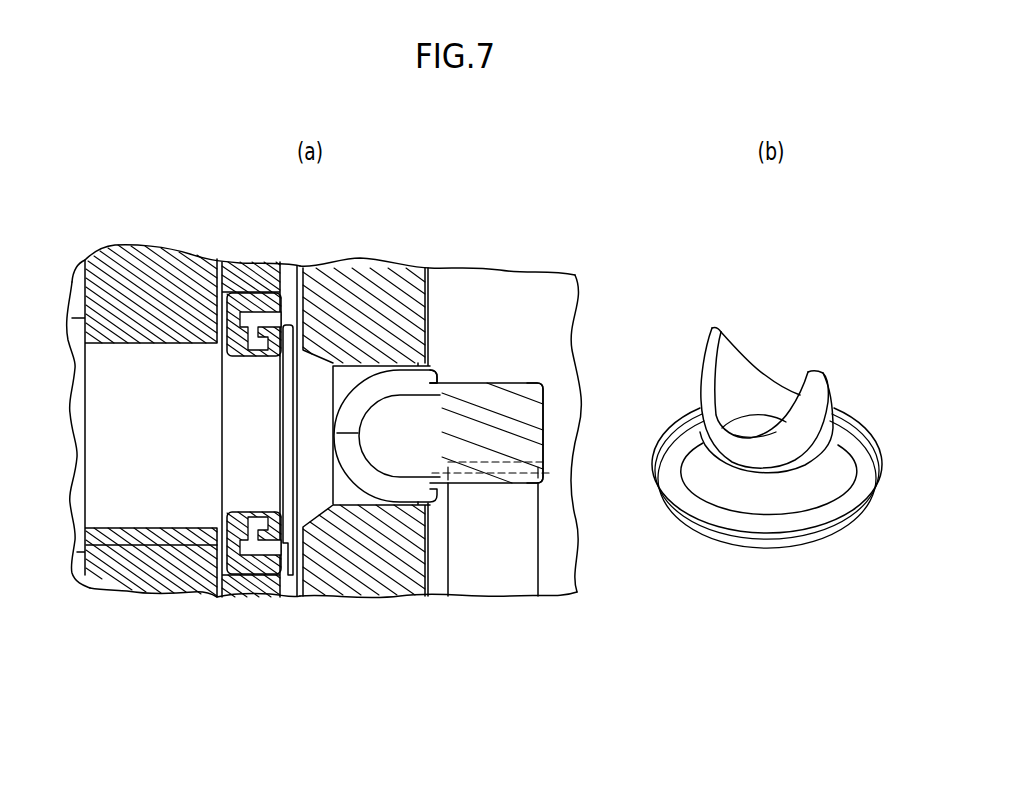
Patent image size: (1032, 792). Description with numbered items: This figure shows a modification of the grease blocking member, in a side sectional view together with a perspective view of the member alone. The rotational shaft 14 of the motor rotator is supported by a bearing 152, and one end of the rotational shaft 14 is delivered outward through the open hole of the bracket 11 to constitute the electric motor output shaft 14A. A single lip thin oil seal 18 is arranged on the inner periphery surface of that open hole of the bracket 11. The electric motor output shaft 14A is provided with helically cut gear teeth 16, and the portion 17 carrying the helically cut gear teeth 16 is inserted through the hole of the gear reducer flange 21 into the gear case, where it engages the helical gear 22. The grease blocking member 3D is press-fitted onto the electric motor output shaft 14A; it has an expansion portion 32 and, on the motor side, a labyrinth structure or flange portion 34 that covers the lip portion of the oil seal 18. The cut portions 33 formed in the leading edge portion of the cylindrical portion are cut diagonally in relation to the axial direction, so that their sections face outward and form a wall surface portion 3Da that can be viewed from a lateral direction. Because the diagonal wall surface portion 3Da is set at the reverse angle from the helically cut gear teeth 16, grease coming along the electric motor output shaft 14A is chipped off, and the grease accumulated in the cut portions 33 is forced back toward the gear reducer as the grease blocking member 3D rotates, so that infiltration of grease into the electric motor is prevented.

The rotational shaft 14 is at (110, 488).
The bearing 152 is at (167, 584).
The bracket 11 is at (252, 587).
The oil seal 18 is at (252, 302).
The labyrinth structure (flange portion) 34 is at (290, 530).
The expansion portion 32 is at (310, 370).
The gear reducer flange 21 is at (378, 577).
The grease blocking member 3D is at (360, 380).
The wall surface portion 3Da is at (407, 393).
The cut portions 33 is at (393, 462).
The portion with helically cut gear teeth 17 is at (522, 383).
The electric motor output shaft 14A is at (543, 397).
The helically cut gear teeth 16 is at (522, 435).
The helical gear 22 is at (507, 570).